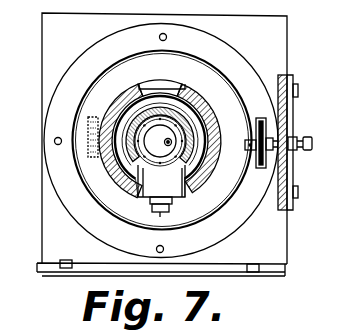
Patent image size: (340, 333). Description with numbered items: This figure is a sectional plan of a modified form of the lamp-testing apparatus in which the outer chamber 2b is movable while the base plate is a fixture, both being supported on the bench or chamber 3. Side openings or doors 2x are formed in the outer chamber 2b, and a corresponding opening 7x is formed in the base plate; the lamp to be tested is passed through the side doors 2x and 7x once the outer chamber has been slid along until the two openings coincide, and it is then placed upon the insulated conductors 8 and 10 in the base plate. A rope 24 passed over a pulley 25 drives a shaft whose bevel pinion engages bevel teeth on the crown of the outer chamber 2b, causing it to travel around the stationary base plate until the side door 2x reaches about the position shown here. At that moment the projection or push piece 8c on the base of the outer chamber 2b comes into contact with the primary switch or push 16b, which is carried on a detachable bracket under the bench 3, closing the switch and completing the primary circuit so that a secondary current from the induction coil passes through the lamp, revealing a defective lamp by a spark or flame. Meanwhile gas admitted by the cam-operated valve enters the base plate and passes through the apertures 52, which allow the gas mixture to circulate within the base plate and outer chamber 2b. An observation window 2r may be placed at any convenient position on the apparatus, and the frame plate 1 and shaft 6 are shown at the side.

The frame plate 1 is at (290, 79).
The bench or chamber 3 is at (42, 60).
The adjusting shaft knob 6 is at (296, 140).
The insulated conductor 8 is at (164, 144).
The insulated conductor 10 is at (160, 141).
The outer chamber 2b is at (124, 100).
The side openings or doors 2x is at (170, 85).
The observation window 2r is at (158, 213).
The opening 7x is at (178, 192).
The push piece 8c is at (88, 150).
The primary switch or push 16b is at (88, 124).
The rope 24 is at (261, 169).
The pulley 25 is at (259, 118).
The apertures 52 is at (195, 115).